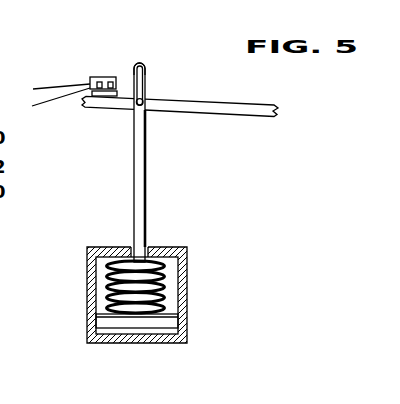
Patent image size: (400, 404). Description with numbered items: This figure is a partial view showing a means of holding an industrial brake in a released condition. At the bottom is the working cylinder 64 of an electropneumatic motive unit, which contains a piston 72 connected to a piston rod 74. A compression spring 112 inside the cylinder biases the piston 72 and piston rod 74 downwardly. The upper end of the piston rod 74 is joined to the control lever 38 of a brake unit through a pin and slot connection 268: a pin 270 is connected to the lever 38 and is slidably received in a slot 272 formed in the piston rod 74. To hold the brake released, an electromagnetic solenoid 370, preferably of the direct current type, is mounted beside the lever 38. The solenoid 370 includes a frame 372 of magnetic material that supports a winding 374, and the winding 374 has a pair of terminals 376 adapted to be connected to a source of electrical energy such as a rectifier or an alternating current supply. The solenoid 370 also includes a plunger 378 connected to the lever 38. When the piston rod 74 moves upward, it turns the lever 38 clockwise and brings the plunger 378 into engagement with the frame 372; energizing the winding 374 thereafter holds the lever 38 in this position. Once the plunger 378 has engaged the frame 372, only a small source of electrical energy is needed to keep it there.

The control lever 38 is at (228, 100).
The working cylinder 64 is at (181, 244).
The piston 72 is at (167, 321).
The piston rod 74 is at (140, 200).
The compression spring 112 is at (162, 281).
The pin and slot connection 268 is at (132, 86).
The pin 270 is at (148, 103).
The slot 272 is at (143, 77).
The electromagnetic solenoid 370 is at (84, 75).
The frame 372 is at (97, 77).
The winding 374 is at (111, 81).
The terminals 376 is at (42, 89).
The plunger 378 is at (101, 97).